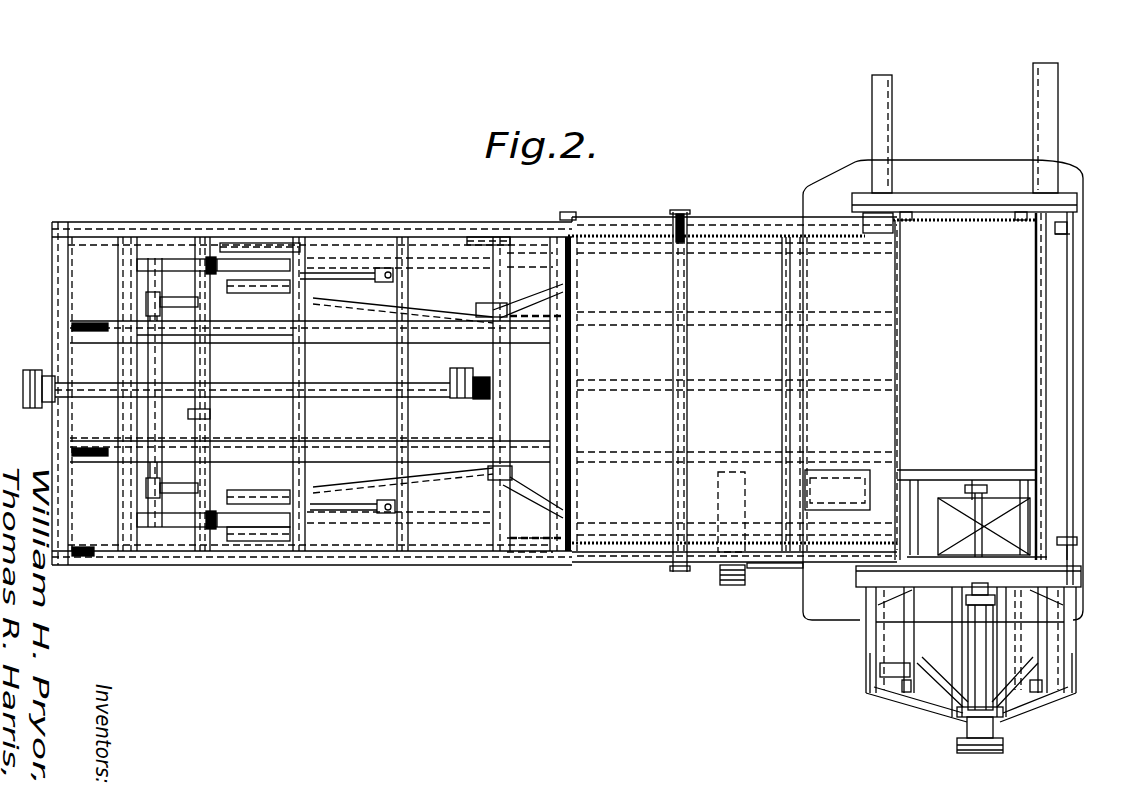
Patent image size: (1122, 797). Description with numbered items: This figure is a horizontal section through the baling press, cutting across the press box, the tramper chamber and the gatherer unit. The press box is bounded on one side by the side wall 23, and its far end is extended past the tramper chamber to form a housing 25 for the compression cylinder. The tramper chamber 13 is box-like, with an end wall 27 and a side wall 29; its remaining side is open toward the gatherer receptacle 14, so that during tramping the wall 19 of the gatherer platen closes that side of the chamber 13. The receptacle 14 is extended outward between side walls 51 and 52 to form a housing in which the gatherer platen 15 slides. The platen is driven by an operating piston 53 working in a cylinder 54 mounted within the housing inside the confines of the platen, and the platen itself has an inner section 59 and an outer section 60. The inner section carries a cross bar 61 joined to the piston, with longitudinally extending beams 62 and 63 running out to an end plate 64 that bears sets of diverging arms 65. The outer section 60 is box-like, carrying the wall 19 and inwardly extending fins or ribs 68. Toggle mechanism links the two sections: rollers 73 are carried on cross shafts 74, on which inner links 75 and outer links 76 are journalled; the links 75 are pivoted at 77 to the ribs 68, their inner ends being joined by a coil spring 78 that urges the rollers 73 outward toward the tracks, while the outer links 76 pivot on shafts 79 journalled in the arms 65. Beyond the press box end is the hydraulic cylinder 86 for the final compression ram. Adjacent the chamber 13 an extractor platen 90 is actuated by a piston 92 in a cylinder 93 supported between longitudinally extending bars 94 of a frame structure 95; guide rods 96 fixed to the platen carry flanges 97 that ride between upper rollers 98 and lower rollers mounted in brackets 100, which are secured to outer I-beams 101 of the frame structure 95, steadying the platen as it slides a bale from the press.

The housing or chamber 13 is at (941, 238).
The gatherer receptacle 14 is at (721, 272).
The gatherer platen 15 is at (518, 236).
The wall of the gatherer platen 19 is at (577, 360).
The side wall 23 is at (901, 354).
The housing 25 is at (876, 112).
The end wall 27 is at (993, 208).
The side wall 29 is at (1036, 351).
The side wall 51 is at (362, 563).
The side wall 52 is at (355, 210).
The operating piston 53 is at (484, 382).
The cylinder 54 is at (339, 394).
The inner section 59 is at (335, 343).
The outer section 60 is at (426, 472).
The cross bar 61 is at (478, 435).
The beam 62 is at (268, 333).
The beam 63 is at (251, 453).
The end plate 64 is at (80, 360).
The diverging arms 65 is at (106, 326).
The upper fins or ribs 68 is at (428, 290).
The rollers 73 is at (212, 258).
The cross shafts 74 is at (204, 415).
The inner links 75 is at (250, 284).
The outer links 76 is at (181, 284).
The pivot 77 is at (296, 308).
The coil spring 78 is at (388, 268).
The shafts 79 is at (155, 419).
The hydraulic cylinder 86 is at (767, 570).
The extractor platen 90 is at (960, 470).
The piston 92 is at (987, 498).
The cylinder 93 is at (980, 643).
The longitudinally extending bars 94 is at (962, 666).
The frame structure 95 is at (853, 654).
The guide rods 96 is at (905, 637).
The flange 97 is at (907, 662).
The upper rollers 98 is at (1030, 730).
The bracket 100 is at (890, 681).
The outer I-beams 101 is at (866, 655).